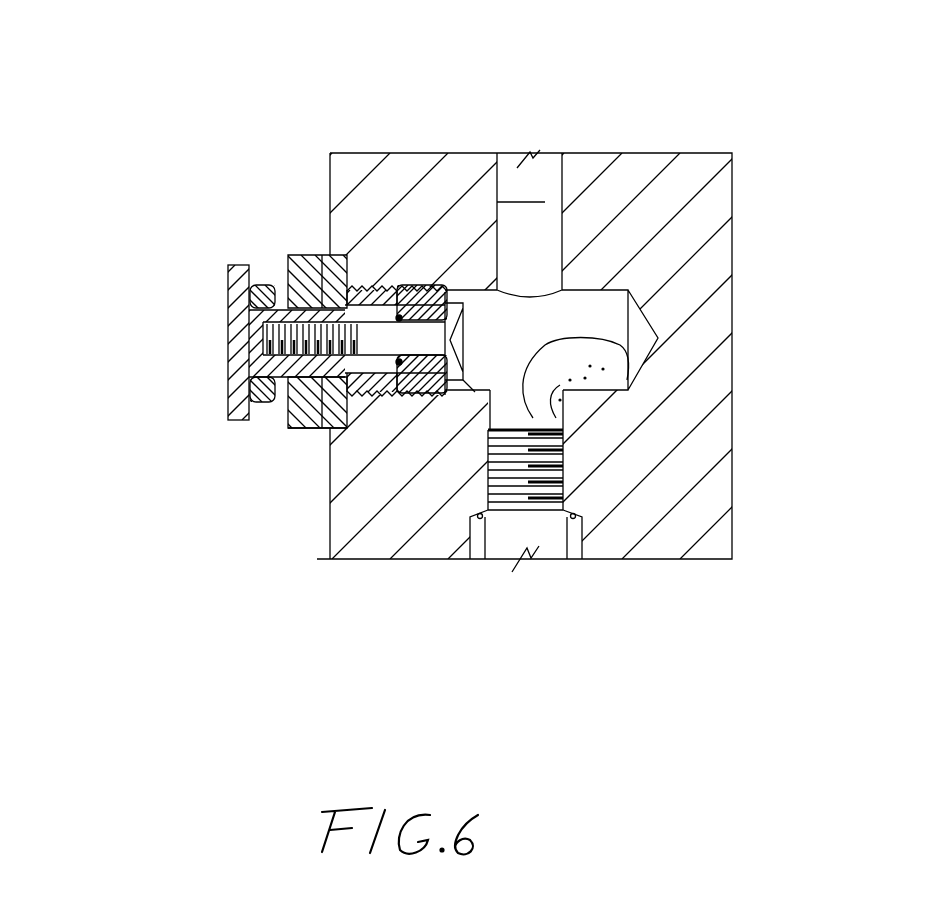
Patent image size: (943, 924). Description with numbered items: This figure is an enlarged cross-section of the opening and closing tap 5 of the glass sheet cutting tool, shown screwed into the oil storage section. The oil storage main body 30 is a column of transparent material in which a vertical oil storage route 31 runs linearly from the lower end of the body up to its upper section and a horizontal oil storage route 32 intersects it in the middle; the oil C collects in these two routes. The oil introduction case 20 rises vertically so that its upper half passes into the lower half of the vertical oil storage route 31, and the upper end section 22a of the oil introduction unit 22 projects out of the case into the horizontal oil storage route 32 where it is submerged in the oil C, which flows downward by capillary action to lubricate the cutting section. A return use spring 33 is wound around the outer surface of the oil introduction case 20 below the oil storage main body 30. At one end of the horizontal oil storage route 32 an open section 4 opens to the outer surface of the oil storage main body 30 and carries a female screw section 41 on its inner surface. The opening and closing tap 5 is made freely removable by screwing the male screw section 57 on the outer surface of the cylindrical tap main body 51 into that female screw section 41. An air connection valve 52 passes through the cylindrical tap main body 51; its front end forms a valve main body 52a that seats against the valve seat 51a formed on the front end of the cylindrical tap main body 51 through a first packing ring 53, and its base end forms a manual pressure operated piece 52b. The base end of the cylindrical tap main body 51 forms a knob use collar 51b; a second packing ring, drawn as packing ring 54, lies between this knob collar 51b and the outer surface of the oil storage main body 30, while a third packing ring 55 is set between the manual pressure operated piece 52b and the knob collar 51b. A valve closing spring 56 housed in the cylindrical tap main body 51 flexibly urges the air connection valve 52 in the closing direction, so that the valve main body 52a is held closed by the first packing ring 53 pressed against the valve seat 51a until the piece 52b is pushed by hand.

The oil storage main body 30 is at (732, 248).
The vertical oil storage route 31 is at (556, 242).
The horizontal oil storage route 32 is at (642, 325).
The return use spring 33 is at (583, 527).
The oil introduction case 20 is at (565, 473).
The oil introduction unit 22 is at (565, 407).
The upper end section of the oil introduction unit 22a is at (620, 365).
The oil C is at (535, 200).
The opening and closing tap 5 is at (138, 316).
The air connection valve 52 is at (226, 363).
The valve main body 52a is at (466, 400).
The manual pressure operated piece 52b is at (238, 267).
The cylindrical tap main body 51 is at (283, 285).
The valve seat 51a is at (437, 290).
The knob use collar 51b is at (305, 253).
The lock nut 54 is at (330, 253).
The packing ring 55 is at (265, 402).
The valve closing spring 56 is at (407, 290).
The male screw section 57 is at (408, 395).
The female screw section 41 is at (377, 290).
The first packing ring 53 is at (455, 392).
The open section 4 is at (320, 428).